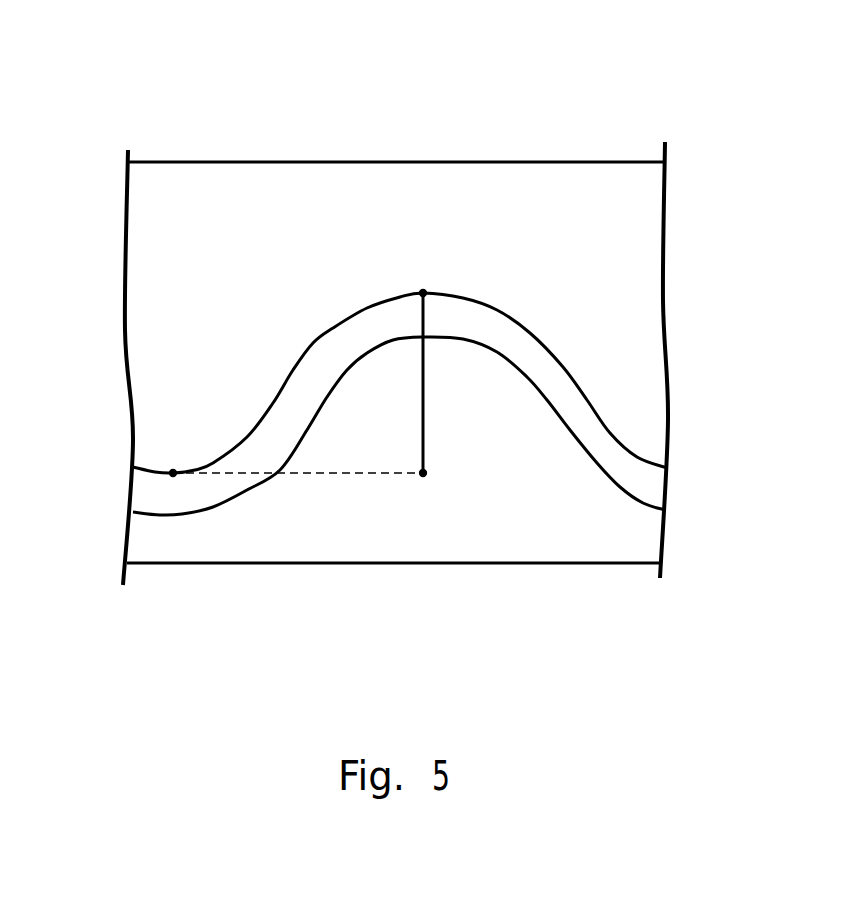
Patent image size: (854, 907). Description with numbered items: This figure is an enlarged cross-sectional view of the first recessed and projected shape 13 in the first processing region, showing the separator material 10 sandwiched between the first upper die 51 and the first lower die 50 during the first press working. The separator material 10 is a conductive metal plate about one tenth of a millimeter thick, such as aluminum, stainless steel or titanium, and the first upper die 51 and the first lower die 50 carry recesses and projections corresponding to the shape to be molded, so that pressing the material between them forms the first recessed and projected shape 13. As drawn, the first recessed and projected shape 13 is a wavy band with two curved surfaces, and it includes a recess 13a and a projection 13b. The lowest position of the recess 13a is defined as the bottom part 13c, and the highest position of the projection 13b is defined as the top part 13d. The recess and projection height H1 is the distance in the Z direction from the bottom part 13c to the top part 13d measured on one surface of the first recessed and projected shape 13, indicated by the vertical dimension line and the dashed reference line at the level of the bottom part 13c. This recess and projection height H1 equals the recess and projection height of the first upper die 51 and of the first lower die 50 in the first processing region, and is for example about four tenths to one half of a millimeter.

The first recessed and projected shape 13 is at (67, 106).
The recess 13a is at (182, 500).
The projection 13b is at (467, 307).
The bottom part 13c is at (173, 473).
The top part 13d is at (423, 293).
The separator material 10 is at (133, 493).
The first lower die 50 is at (652, 537).
The first upper die 51 is at (612, 168).
The recess and projection height H1 is at (316, 385).